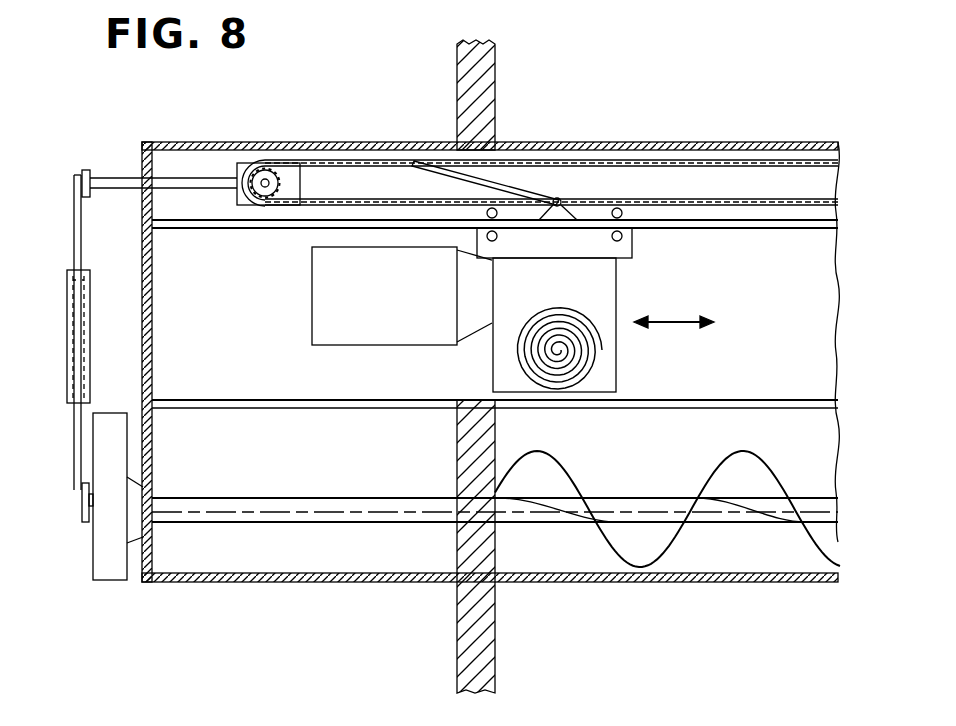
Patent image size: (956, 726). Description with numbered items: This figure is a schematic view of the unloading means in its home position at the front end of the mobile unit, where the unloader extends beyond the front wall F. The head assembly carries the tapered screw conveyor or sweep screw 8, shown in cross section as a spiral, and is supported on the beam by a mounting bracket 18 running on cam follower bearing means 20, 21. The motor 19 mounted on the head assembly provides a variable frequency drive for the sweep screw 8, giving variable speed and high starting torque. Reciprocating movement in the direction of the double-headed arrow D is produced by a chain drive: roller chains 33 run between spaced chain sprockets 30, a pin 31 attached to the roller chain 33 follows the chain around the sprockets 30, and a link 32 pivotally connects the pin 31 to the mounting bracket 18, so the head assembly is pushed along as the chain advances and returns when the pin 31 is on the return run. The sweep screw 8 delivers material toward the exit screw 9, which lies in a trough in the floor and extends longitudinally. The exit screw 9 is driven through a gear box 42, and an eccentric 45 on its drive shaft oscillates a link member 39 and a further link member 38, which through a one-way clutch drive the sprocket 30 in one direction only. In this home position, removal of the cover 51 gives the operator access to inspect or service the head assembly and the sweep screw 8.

The cover 51 is at (128, 146).
The front wall F is at (457, 52).
The roller chain 33 is at (348, 160).
The chain sprocket 30 is at (259, 168).
The pin 31 is at (415, 160).
The link 32 is at (510, 182).
The link member 39 is at (73, 240).
The link member 38 is at (67, 350).
The eccentric 45 is at (82, 488).
The gear box 42 is at (93, 576).
The motor 19 is at (312, 300).
The mounting bracket 18 is at (632, 256).
The cam follower bearing means 20 is at (487, 210).
The cam follower bearing means 21 is at (487, 239).
The tapered screw conveyor or sweep screw 8 is at (612, 347).
The double-headed arrow D is at (675, 322).
The exit screw 9 is at (667, 547).